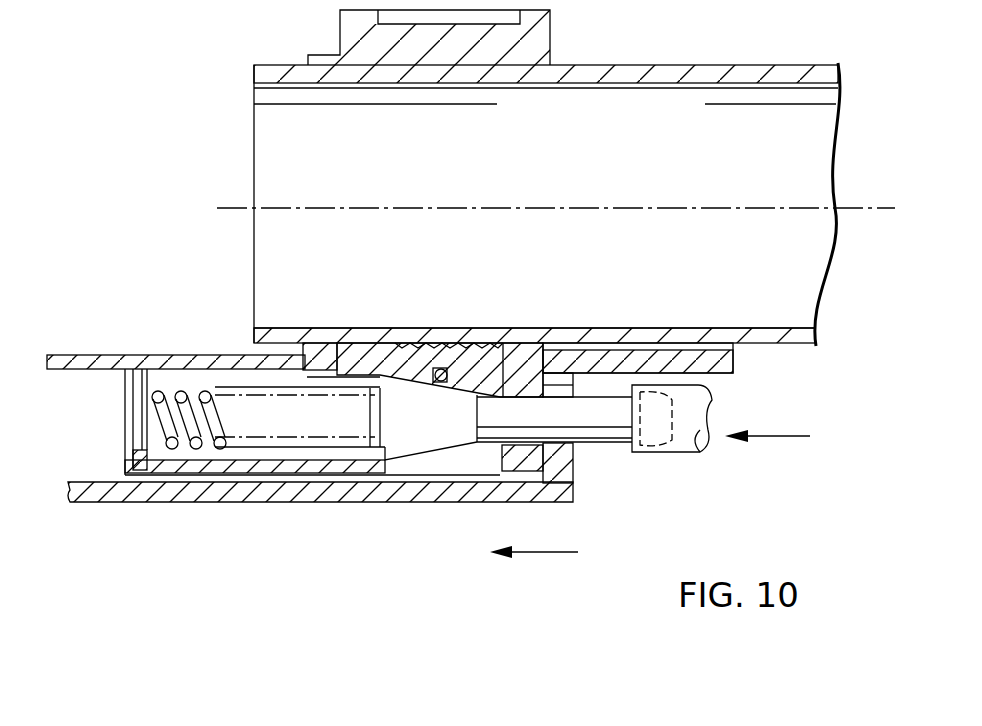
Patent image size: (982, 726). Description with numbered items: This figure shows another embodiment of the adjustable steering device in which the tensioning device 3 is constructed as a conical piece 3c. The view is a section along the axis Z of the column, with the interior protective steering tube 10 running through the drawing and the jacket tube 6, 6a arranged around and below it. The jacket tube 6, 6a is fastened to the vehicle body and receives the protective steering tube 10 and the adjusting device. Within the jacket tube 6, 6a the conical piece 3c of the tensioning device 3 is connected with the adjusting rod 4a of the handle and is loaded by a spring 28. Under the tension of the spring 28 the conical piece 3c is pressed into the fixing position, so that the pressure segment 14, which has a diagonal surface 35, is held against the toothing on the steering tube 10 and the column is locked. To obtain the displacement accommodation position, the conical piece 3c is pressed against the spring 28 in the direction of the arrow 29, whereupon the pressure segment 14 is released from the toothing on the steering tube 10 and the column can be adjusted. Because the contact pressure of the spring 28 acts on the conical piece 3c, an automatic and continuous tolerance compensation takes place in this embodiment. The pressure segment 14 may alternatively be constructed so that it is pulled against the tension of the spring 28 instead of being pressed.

The axis Z is at (218, 205).
The protective steering tube 10 is at (663, 327).
The pressure segment 14 is at (428, 312).
The diagonal surface 35 is at (468, 384).
The jacket tube 6 is at (720, 356).
The tensioning device 3 is at (441, 470).
The conical piece 3c is at (407, 437).
The adjusting rod 4a is at (675, 446).
The spring 28 is at (200, 452).
The jacket tube 6a is at (258, 490).
The arrow 29 is at (552, 553).